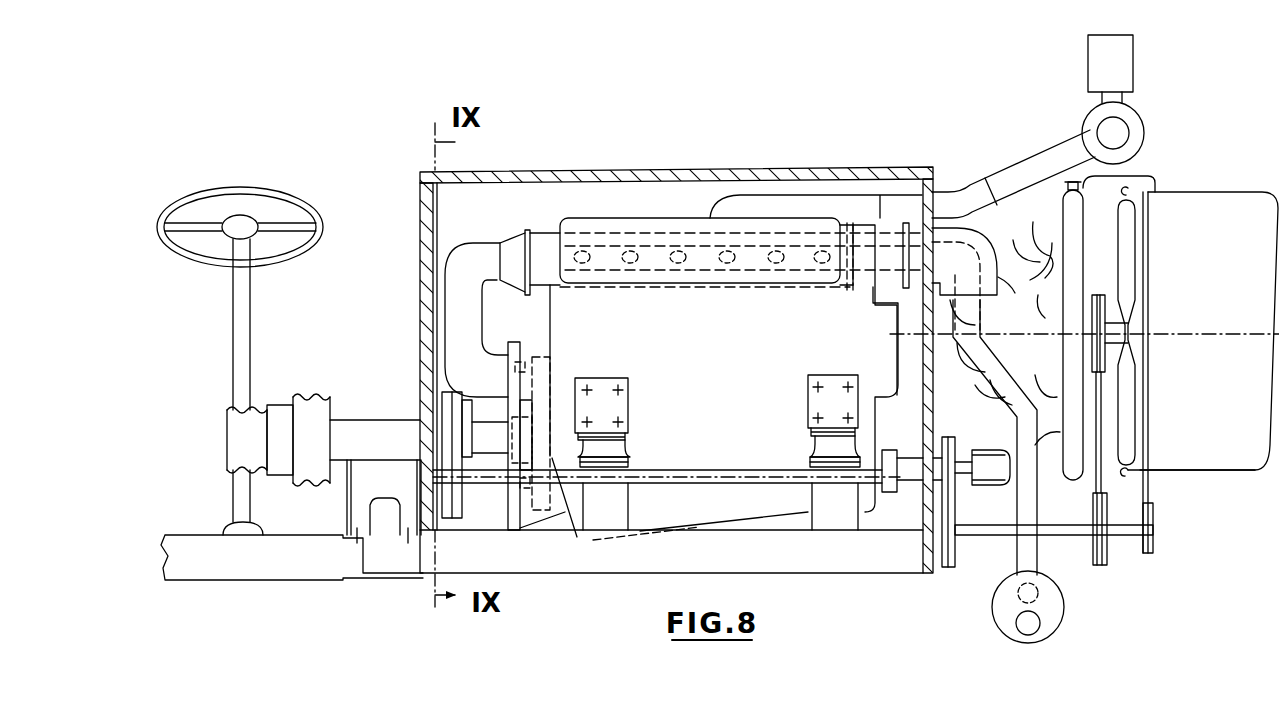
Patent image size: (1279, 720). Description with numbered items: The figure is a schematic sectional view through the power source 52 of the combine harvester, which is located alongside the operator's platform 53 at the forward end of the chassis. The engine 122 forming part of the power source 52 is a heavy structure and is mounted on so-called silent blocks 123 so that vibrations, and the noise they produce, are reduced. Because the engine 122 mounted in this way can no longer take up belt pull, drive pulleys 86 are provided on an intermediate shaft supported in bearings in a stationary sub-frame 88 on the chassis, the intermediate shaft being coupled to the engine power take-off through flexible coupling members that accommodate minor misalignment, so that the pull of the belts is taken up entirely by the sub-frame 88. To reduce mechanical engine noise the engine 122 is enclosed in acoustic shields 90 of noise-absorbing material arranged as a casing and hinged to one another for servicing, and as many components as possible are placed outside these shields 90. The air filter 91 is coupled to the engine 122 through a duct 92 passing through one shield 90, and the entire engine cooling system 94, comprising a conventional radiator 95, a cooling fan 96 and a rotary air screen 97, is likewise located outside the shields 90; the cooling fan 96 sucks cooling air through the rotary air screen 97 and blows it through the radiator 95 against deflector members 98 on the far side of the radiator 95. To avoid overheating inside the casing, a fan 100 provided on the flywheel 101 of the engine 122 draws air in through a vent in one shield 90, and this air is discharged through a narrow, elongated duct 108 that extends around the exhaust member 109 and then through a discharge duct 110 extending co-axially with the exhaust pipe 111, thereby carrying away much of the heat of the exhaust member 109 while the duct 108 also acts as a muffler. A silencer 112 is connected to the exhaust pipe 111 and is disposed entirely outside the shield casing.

The power source 52 is at (856, 146).
The operator's platform 53 is at (320, 580).
The drive pulleys 86 is at (250, 412).
The sub-frame 88 is at (370, 420).
The acoustic shields 90 is at (543, 170).
The air filter 91 is at (1133, 80).
The duct 92 is at (1023, 162).
The engine cooling system 94 is at (1215, 183).
The radiator 95 is at (1083, 275).
The cooling fan 96 is at (1121, 202).
The rotary air screen 97 is at (1220, 470).
The deflector members 98 is at (1005, 333).
The fan 100 is at (517, 362).
The flywheel 101 is at (547, 354).
The duct 108 is at (463, 243).
The exhaust member 109 is at (600, 250).
The discharge duct 110 is at (988, 298).
The exhaust pipe 111 is at (1038, 518).
The silencer 112 is at (1065, 610).
The engine 122 is at (668, 218).
The silent blocks 123 is at (623, 447).